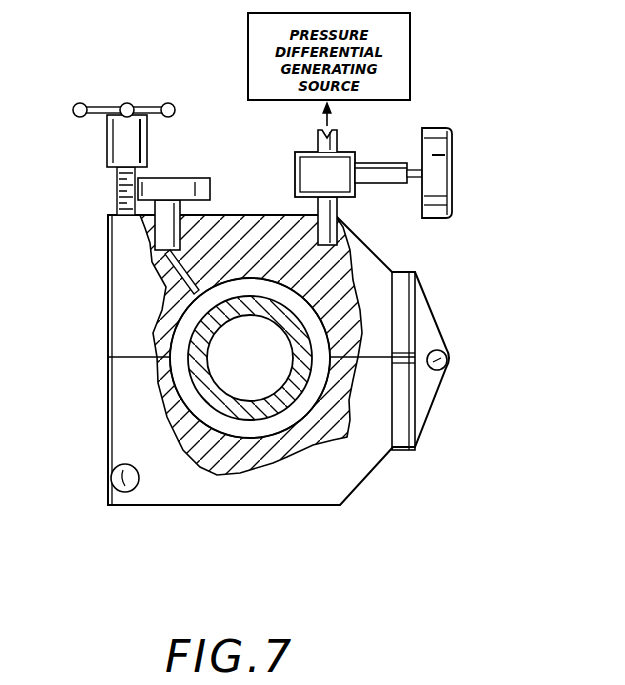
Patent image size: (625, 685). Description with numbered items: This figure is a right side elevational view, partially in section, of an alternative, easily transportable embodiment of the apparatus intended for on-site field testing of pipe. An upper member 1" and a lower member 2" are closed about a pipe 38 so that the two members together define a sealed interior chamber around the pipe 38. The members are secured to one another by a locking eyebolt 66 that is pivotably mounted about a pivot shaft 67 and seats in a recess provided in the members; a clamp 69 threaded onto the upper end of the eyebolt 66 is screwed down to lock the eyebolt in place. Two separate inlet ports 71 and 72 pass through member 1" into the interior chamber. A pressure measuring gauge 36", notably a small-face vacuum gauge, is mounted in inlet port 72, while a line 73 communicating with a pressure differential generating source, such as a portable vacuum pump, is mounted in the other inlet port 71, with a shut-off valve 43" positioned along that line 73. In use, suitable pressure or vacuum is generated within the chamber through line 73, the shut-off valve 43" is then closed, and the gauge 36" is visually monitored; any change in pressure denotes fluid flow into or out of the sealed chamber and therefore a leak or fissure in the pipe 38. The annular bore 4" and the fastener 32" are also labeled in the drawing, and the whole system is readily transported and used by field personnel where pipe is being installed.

The member 1 is at (140, 323).
The member 2 is at (134, 430).
The bore ring 4 is at (203, 415).
The bolt 32 is at (452, 358).
The pressure measuring gauge 36 is at (185, 177).
The pipe 38 is at (277, 418).
The shut-off valve 43 is at (442, 128).
The eyebolt 66 is at (104, 198).
The shaft 67 is at (123, 492).
The clamp 69 is at (97, 106).
The inlet port 71 is at (300, 290).
The inlet port 72 is at (150, 268).
The line 73 is at (338, 142).